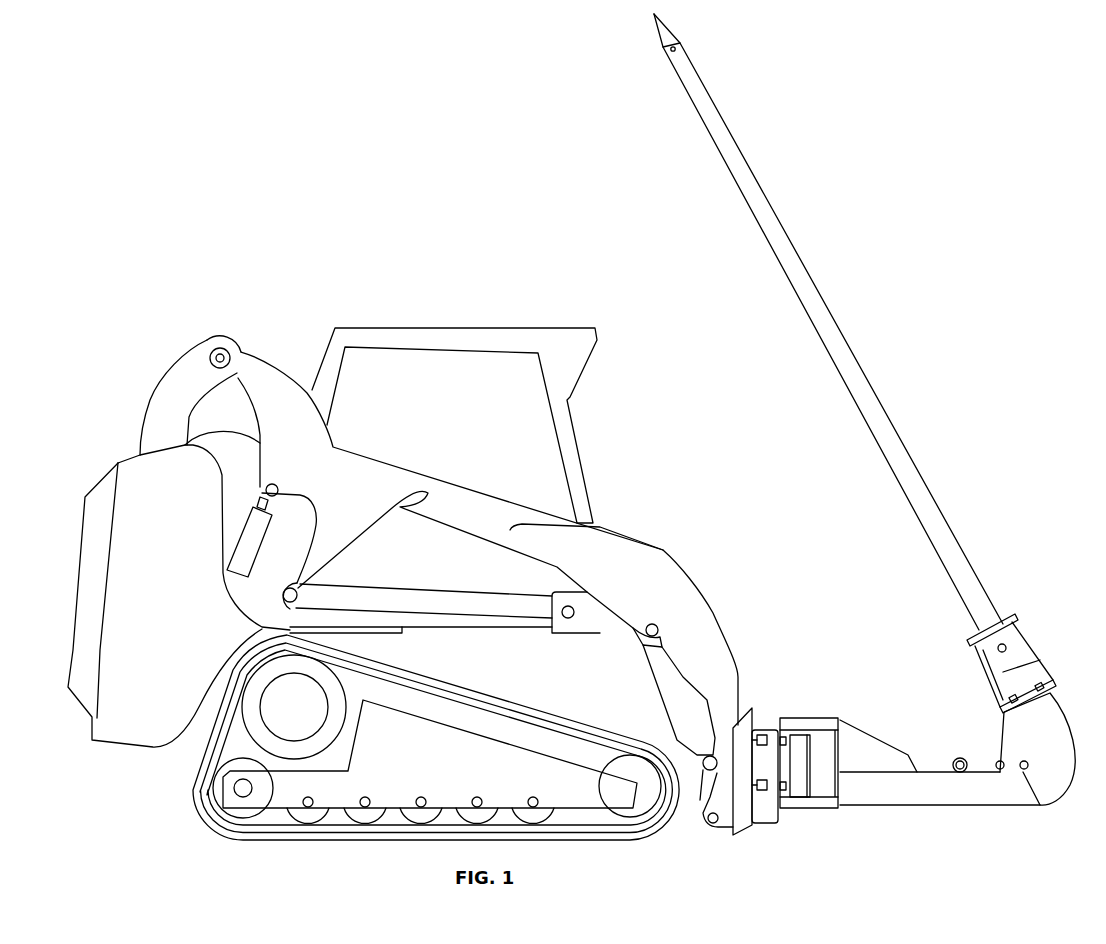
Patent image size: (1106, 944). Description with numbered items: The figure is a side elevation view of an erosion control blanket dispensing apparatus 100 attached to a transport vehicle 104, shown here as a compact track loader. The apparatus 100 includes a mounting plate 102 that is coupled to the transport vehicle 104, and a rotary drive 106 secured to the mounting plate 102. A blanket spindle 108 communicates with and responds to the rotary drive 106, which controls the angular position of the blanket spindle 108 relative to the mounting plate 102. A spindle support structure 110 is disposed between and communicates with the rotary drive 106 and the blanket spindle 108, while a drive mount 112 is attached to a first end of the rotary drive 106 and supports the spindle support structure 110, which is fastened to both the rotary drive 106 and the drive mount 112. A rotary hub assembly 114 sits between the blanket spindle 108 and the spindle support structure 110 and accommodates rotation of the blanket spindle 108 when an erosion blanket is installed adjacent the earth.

The erosion control blanket dispensing apparatus 100 is at (833, 195).
The mounting plate 102 is at (742, 730).
The transport vehicle 104 is at (478, 306).
The rotary drive 106 is at (798, 768).
The blanket spindle 108 is at (921, 518).
The spindle support structure 110 is at (941, 822).
The drive mount 112 is at (832, 768).
The rotary hub assembly 114 is at (1069, 711).